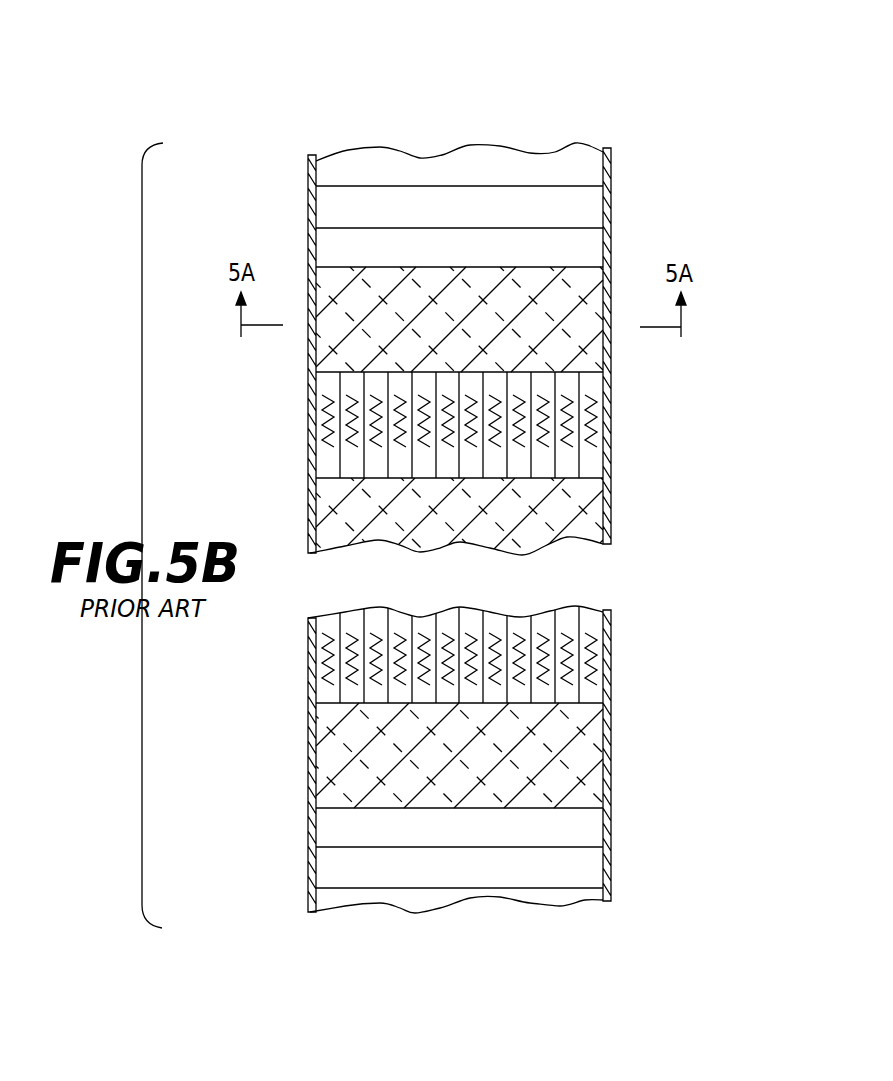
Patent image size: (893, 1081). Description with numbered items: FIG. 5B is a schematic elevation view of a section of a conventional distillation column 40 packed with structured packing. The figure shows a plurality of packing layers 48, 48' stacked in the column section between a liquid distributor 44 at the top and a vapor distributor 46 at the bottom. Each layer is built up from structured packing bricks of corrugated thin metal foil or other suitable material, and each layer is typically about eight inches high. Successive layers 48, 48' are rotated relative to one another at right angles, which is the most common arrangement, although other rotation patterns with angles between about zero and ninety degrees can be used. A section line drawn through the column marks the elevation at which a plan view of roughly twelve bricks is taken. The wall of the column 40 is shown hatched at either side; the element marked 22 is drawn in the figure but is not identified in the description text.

The distillation column 40 is at (732, 92).
The housing wall 22 is at (610, 357).
The liquid distributor 44 is at (587, 212).
The vapor distributor 46 is at (585, 870).
The layer of structured packing 48 is at (415, 332).
The layer of structured packing 48' is at (415, 425).